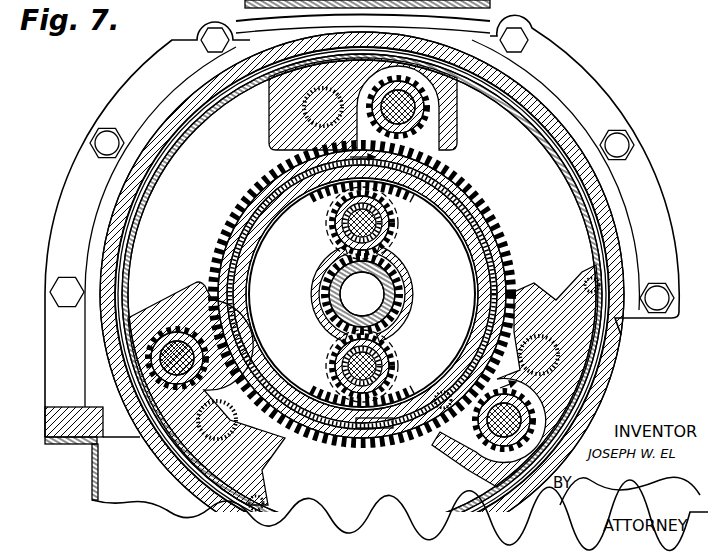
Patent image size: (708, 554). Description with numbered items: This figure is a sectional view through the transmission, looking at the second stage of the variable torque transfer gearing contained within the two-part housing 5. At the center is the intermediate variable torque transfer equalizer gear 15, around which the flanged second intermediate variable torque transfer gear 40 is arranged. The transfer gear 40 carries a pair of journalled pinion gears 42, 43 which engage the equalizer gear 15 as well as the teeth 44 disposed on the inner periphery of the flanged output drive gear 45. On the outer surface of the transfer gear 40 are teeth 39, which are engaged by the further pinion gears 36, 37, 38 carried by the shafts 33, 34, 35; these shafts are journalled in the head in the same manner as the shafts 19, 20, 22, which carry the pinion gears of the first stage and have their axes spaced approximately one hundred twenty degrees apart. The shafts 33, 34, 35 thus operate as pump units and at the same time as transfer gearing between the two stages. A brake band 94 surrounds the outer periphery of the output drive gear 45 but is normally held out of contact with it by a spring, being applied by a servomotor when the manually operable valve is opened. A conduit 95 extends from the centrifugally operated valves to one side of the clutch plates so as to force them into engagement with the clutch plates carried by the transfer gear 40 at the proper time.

The housing 5 is at (593, 96).
The conduit 95 is at (305, 103).
The shaft 19 is at (272, 112).
The shaft 33 is at (432, 100).
The pinion gear 36 is at (418, 120).
The teeth 39 is at (453, 163).
The second intermediate variable torque transfer gear 40 is at (500, 236).
The pinion gear 42 is at (388, 232).
The intermediate variable torque transfer equalizer gear 15 is at (449, 261).
The output drive gear 45 is at (469, 283).
The pinion gear 37 is at (178, 330).
The shaft 34 is at (152, 355).
The teeth 44 is at (335, 350).
The pinion gear 43 is at (388, 356).
The shaft 22 is at (560, 360).
The shaft 35 is at (532, 413).
The shaft 20 is at (195, 420).
The brake band 94 is at (324, 417).
The pinion gear 38 is at (453, 458).